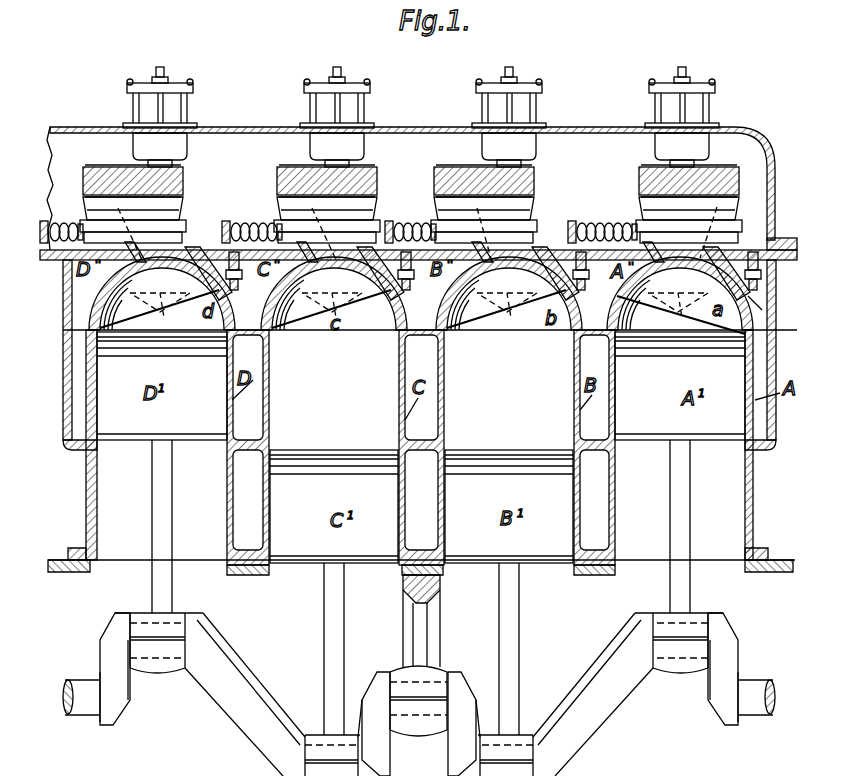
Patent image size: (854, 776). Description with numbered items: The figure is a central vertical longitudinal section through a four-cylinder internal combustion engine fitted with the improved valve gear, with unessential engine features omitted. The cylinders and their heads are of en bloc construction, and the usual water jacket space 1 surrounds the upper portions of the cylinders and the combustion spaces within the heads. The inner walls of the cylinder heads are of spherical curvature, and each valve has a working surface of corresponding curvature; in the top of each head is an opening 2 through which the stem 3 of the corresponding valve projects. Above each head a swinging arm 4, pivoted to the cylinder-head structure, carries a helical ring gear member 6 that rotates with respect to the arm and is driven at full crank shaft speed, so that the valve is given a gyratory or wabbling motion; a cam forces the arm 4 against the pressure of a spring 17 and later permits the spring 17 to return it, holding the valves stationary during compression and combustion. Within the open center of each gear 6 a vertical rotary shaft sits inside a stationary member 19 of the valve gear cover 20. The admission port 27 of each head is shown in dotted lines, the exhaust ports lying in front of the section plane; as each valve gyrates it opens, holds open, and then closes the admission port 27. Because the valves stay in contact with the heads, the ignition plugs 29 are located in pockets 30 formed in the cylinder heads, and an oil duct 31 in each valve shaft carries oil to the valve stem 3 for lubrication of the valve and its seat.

The water jacket space 1 is at (786, 298).
The opening 2 is at (178, 258).
The valve stem 3 is at (118, 208).
The arm 4 is at (187, 232).
The ring gear member 6 is at (182, 210).
The spring 17 is at (62, 222).
The stationary member 19 is at (170, 165).
The valve gear cover 20 is at (752, 150).
The admission port 27 is at (166, 312).
The ignition plug 29 is at (240, 280).
The pocket 30 is at (232, 300).
The oil duct 31 is at (762, 310).